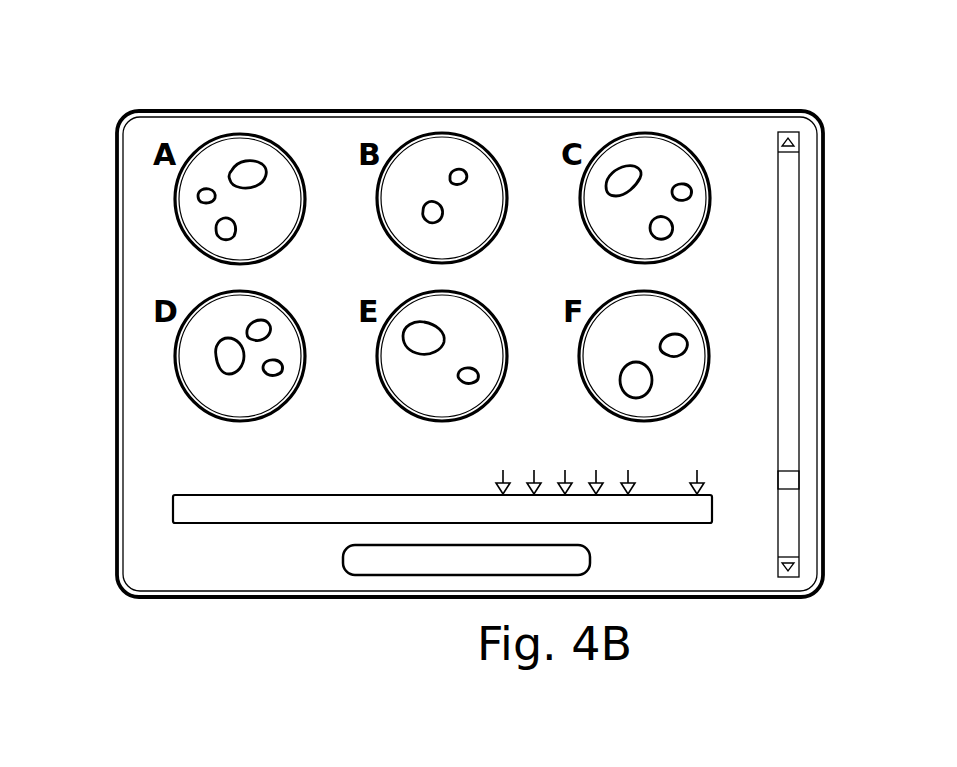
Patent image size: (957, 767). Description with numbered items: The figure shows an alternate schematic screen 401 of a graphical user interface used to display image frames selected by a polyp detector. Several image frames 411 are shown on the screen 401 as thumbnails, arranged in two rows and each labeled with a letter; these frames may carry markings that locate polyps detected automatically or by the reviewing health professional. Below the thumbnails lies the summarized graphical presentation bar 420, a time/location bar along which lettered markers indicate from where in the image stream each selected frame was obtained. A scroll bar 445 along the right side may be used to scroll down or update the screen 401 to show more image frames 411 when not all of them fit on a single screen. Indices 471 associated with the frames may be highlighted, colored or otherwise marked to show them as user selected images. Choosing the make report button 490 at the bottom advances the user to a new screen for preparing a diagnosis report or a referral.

The screen 401 is at (102, 101).
The image frames 411 is at (284, 148).
The scroll bar 445 is at (777, 180).
The indices 471 is at (148, 150).
The summarized graphical presentation bar 420 is at (291, 495).
The make report button 490 is at (343, 565).